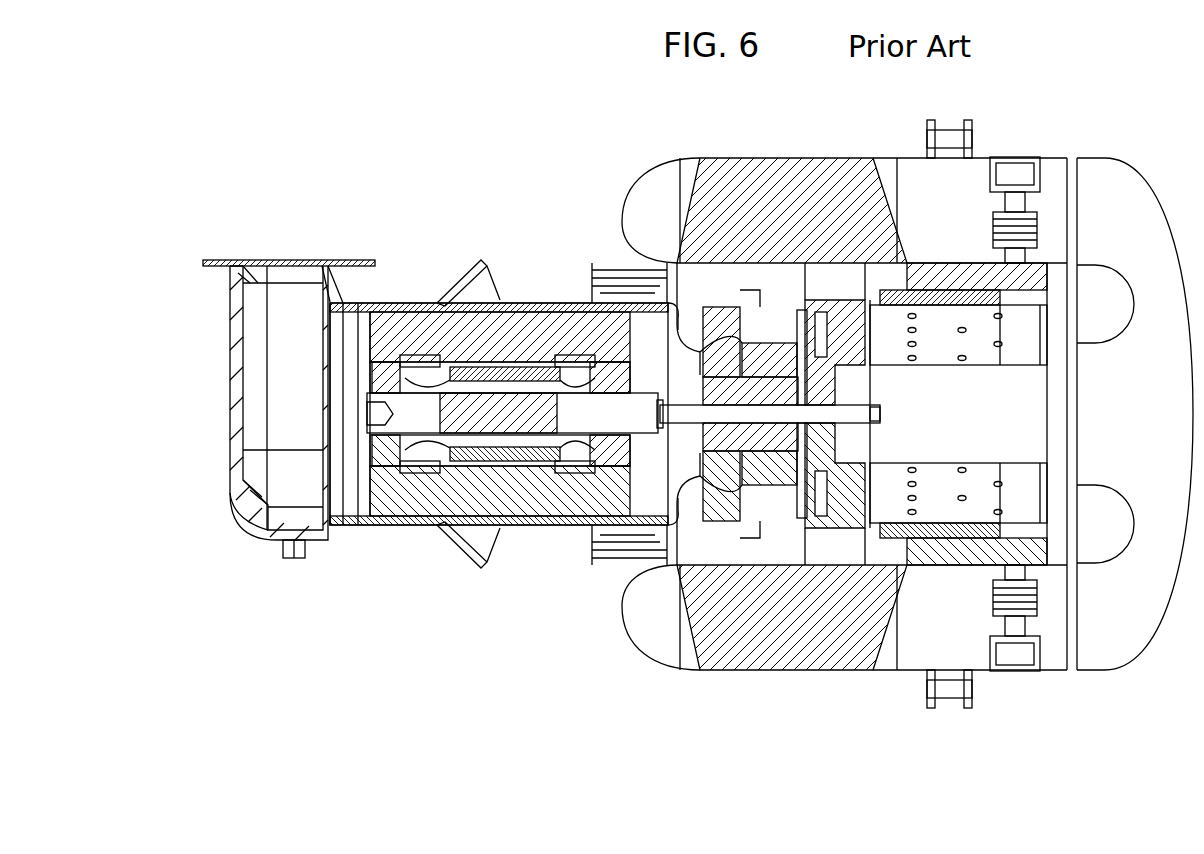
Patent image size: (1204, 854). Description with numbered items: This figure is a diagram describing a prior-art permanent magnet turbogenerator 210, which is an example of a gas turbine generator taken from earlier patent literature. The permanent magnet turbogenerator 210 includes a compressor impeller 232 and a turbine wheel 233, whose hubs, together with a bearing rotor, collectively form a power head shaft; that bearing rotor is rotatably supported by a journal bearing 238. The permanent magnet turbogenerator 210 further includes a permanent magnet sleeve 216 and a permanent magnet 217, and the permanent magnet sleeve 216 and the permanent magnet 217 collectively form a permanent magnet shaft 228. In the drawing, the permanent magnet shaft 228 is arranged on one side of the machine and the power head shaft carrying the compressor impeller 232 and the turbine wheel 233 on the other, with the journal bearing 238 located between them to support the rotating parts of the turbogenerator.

The permanent magnet turbogenerator 210 is at (507, 197).
The permanent magnet sleeve 216 is at (648, 445).
The permanent magnet 217 is at (530, 423).
The permanent magnet shaft 228 is at (641, 385).
The compressor impeller 232 is at (698, 360).
The turbine wheel 233 is at (838, 387).
The journal bearing 238 is at (768, 452).